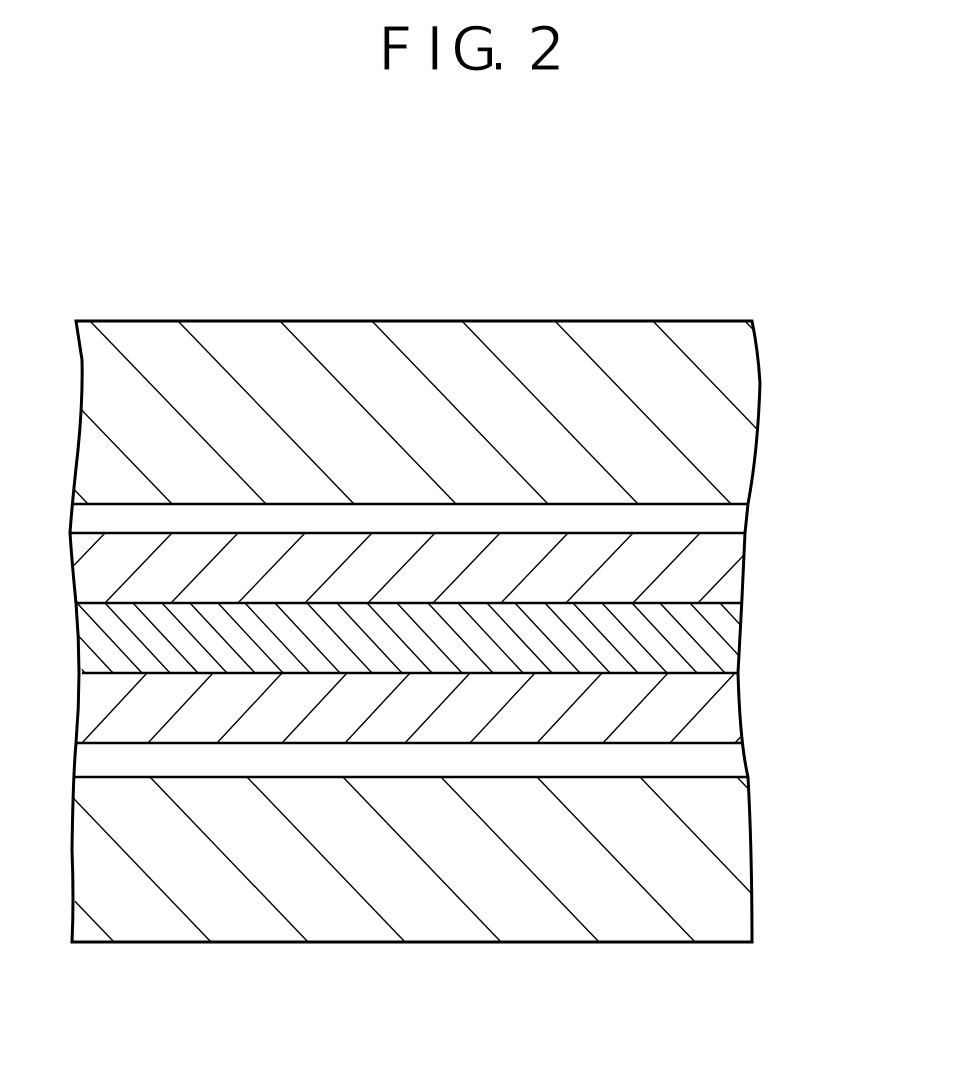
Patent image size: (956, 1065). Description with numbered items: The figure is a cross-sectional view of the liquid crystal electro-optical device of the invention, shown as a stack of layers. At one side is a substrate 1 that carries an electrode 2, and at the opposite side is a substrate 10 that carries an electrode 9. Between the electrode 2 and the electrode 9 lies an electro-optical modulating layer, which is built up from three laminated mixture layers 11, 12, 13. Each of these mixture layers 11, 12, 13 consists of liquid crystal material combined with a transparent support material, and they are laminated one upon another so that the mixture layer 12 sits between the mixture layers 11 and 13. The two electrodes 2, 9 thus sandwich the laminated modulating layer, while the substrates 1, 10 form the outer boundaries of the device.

The substrate 1 is at (750, 383).
The electrode 2 is at (738, 527).
The mixture layer 11 is at (732, 592).
The mixture layer 12 is at (723, 655).
The mixture layer 13 is at (730, 723).
The electrode 9 is at (735, 768).
The substrate 10 is at (730, 912).